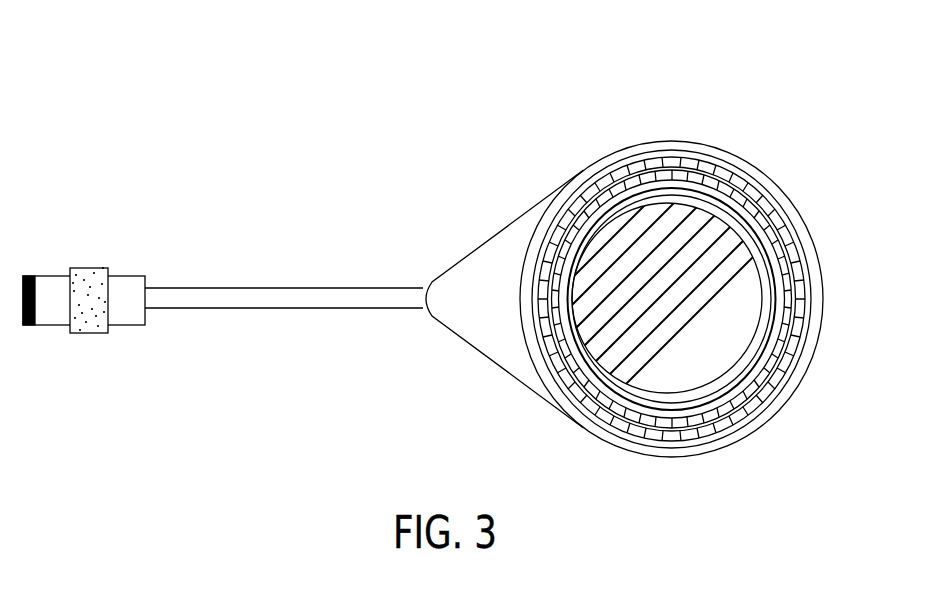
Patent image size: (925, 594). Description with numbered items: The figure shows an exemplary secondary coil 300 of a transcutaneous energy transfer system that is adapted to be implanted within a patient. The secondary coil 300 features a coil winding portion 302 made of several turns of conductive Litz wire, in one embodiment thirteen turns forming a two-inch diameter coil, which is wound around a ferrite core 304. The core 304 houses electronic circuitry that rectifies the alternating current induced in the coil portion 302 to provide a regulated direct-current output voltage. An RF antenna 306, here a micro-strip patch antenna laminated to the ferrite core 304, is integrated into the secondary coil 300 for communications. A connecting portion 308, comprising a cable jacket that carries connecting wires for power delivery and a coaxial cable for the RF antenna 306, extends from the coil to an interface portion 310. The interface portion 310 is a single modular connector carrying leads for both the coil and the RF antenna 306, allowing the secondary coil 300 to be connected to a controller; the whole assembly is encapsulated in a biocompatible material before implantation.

The secondary coil 300 is at (458, 92).
The coil winding portion 302 is at (818, 300).
The core 304 is at (757, 177).
The RF antenna 306 is at (762, 268).
The connecting portion 308 is at (292, 288).
The interface portion 310 is at (98, 244).